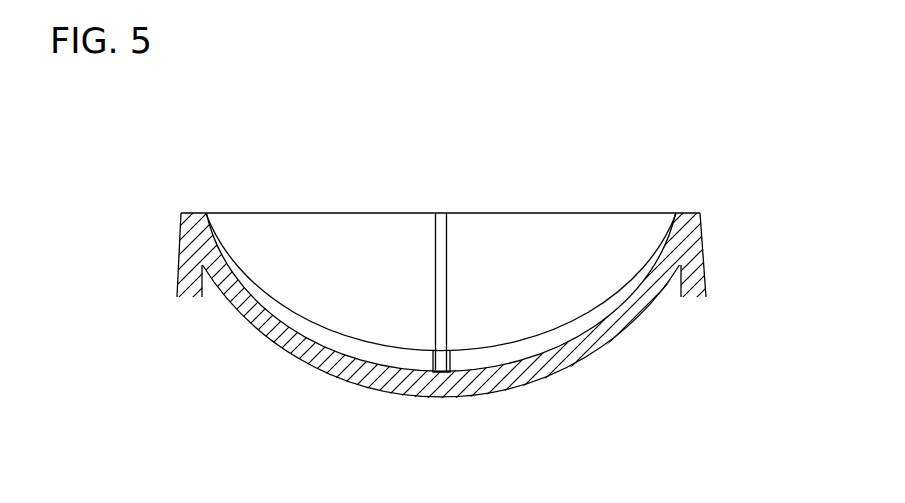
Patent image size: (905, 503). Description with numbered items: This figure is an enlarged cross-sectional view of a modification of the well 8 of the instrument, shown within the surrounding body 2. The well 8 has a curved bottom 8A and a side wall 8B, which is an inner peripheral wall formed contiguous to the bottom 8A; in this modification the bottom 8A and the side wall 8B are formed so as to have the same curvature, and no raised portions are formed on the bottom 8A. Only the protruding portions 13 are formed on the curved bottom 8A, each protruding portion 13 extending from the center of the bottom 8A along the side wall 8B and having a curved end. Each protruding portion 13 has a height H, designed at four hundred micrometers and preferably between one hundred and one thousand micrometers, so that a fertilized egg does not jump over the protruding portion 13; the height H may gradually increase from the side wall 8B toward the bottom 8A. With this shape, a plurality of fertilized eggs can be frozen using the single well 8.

The housing body 2 is at (707, 236).
The well 8 is at (582, 249).
The bottom 8A is at (378, 370).
The side wall 8B is at (262, 303).
The protruding portion 13 is at (446, 273).
The height of protruding portion H is at (432, 362).